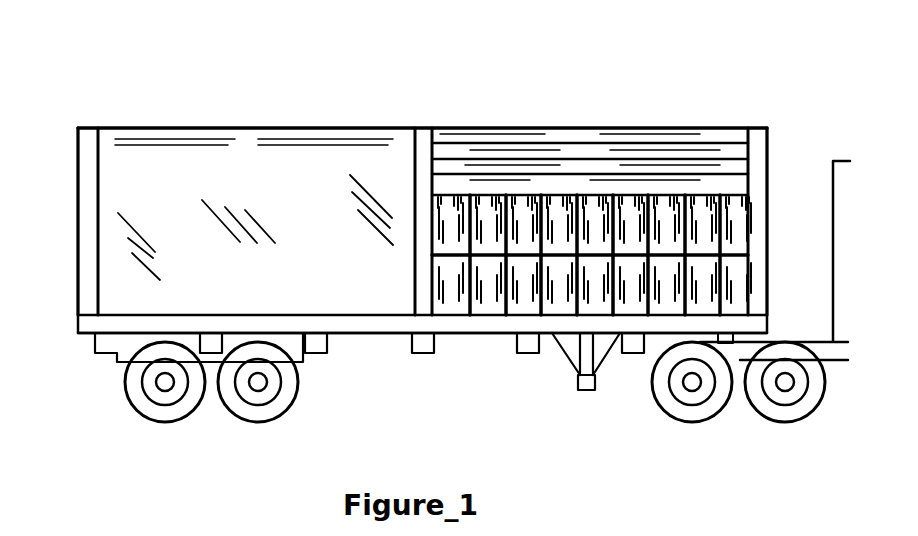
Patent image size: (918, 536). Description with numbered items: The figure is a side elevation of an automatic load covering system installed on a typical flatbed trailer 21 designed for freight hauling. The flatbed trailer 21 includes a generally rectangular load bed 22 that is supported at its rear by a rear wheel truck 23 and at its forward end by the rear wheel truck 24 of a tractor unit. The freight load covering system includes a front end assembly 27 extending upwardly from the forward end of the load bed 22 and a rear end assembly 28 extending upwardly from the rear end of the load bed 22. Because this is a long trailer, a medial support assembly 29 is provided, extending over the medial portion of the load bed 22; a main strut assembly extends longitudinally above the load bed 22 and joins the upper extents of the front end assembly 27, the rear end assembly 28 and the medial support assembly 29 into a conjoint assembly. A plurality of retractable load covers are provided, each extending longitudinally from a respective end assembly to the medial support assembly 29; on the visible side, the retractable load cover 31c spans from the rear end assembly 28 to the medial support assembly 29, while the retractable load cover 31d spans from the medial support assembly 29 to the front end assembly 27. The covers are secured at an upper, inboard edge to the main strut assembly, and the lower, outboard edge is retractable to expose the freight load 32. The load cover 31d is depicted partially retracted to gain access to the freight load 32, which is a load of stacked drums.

The flatbed trailer 21 is at (495, 355).
The load bed 22 is at (368, 335).
The rear wheel truck 23 is at (202, 413).
The rear wheel truck of a tractor unit 24 is at (662, 422).
The front end assembly 27 is at (770, 160).
The rear end assembly 28 is at (78, 170).
The medial support assembly 29 is at (420, 140).
The retractable load cover 31c is at (218, 178).
The retractable load cover 31d is at (508, 140).
The freight load 32 is at (667, 217).